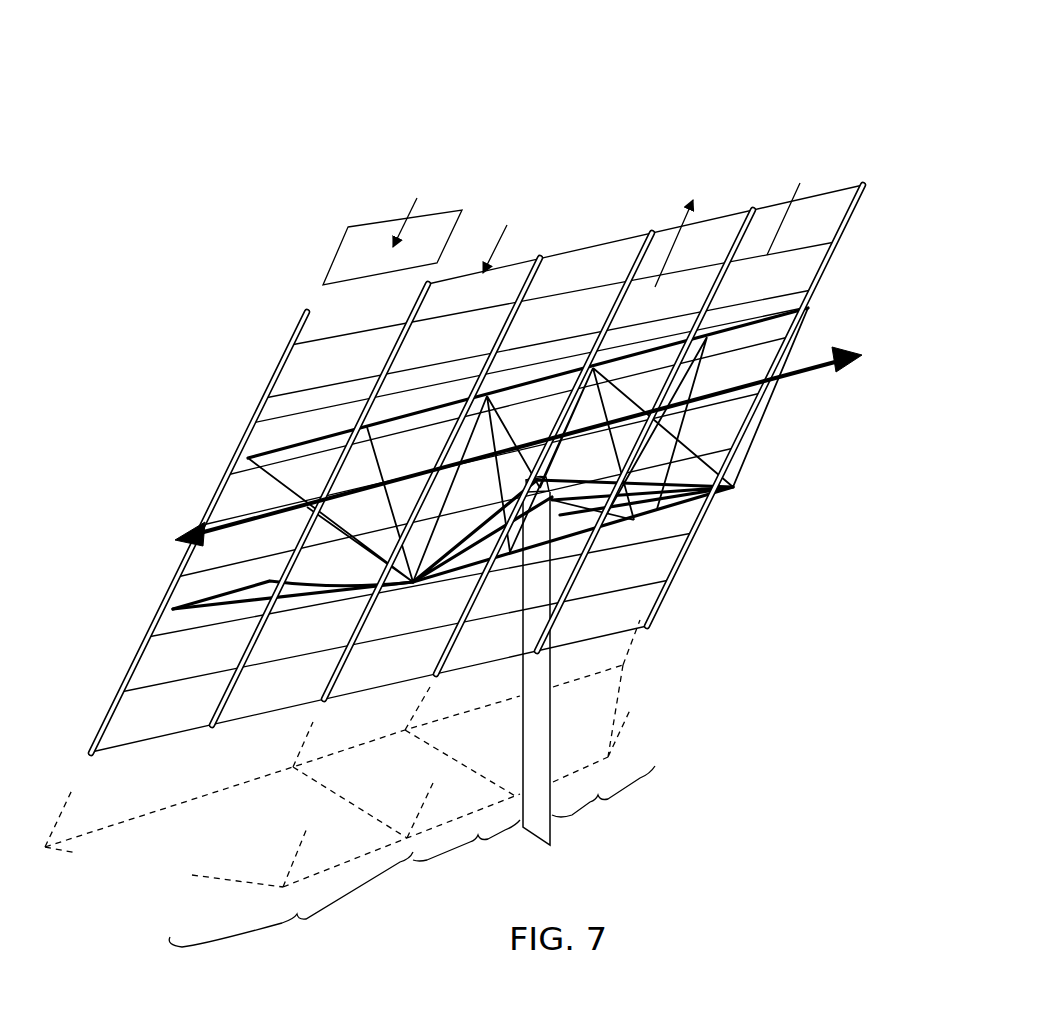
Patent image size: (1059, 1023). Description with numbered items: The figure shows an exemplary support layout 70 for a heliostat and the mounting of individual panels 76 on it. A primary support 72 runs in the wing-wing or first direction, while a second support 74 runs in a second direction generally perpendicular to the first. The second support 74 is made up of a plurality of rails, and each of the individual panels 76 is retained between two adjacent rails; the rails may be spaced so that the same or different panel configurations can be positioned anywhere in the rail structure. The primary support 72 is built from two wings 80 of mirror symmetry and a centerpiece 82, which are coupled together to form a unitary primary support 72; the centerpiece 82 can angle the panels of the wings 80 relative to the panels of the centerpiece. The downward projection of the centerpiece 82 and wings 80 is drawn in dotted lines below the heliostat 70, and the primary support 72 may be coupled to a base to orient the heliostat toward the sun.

The support layout 70 is at (205, 112).
The primary support 72 is at (737, 490).
The second support 74 is at (427, 286).
The individual panels 76 is at (350, 248).
The wings 80 is at (350, 788).
The centerpiece 82 is at (452, 821).